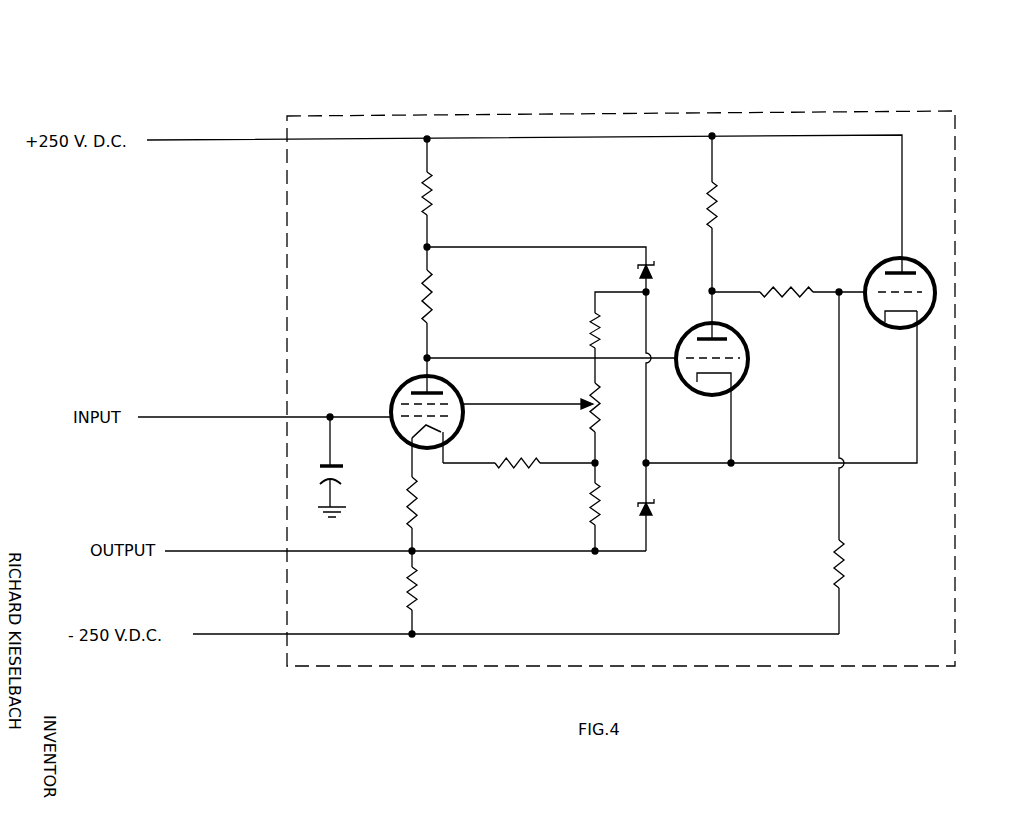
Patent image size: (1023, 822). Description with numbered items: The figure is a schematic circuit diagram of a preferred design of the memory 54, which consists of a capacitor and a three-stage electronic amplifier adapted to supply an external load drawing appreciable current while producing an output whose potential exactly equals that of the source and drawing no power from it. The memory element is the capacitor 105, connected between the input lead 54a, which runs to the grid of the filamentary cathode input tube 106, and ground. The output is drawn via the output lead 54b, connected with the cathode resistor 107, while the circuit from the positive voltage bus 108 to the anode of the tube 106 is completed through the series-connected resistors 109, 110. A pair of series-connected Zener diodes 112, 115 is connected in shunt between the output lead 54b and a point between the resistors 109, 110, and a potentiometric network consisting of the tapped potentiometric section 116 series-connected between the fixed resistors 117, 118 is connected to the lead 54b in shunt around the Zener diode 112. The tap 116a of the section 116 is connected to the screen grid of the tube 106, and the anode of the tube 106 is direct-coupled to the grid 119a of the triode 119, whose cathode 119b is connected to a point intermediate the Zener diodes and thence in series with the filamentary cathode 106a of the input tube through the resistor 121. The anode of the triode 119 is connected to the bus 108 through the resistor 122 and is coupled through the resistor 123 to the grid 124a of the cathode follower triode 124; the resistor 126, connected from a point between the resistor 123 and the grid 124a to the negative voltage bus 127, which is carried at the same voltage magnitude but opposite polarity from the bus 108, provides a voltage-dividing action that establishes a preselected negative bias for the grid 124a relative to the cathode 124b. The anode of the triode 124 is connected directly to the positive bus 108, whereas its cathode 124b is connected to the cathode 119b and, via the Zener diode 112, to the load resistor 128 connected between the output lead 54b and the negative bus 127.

The memory 54 is at (939, 107).
The input lead 54a is at (243, 417).
The output lead 54b is at (248, 551).
The capacitor 105 is at (337, 466).
The filamentary cathode input tube 106 is at (397, 390).
The filamentary cathode 106a is at (452, 427).
The cathode resistor 107 is at (426, 514).
The positive voltage bus 108 is at (493, 139).
The resistor 109 is at (421, 296).
The resistor 110 is at (421, 192).
The Zener diode 112 is at (658, 512).
The Zener diode 115 is at (640, 273).
The tapped potentiometric section 116 is at (599, 405).
The tap 116a is at (542, 400).
The fixed resistor 117 is at (586, 513).
The fixed resistor 118 is at (589, 326).
The triode 119 is at (748, 354).
The grid 119a is at (742, 363).
The cathode 119b is at (710, 381).
The resistor 121 is at (527, 463).
The resistor 122 is at (718, 210).
The resistor 123 is at (808, 300).
The cathode follower triode 124 is at (933, 270).
The grid 124a is at (882, 290).
The cathode 124b is at (895, 314).
The resistor 126 is at (833, 570).
The negative voltage bus 127 is at (636, 631).
The load resistor 128 is at (420, 600).